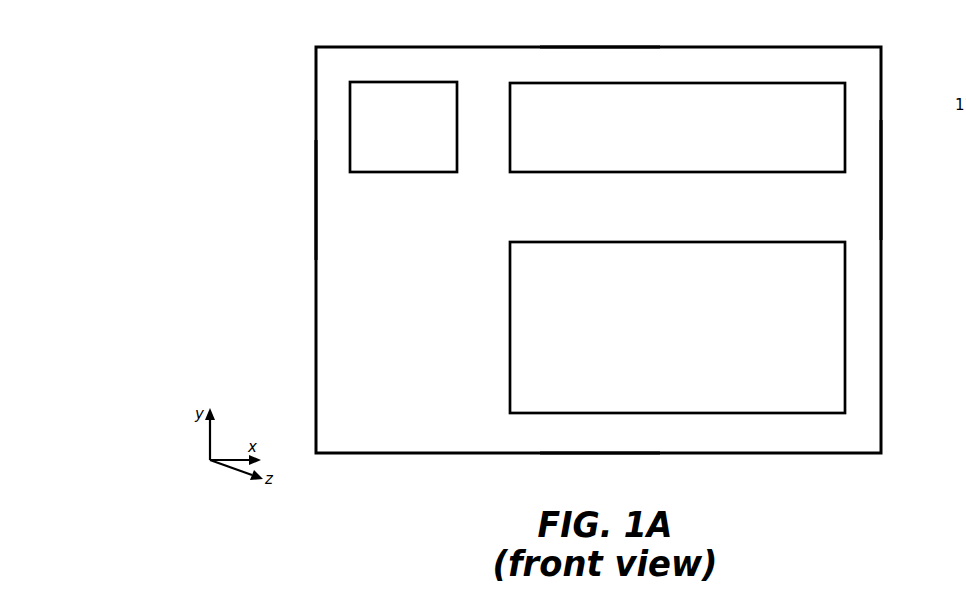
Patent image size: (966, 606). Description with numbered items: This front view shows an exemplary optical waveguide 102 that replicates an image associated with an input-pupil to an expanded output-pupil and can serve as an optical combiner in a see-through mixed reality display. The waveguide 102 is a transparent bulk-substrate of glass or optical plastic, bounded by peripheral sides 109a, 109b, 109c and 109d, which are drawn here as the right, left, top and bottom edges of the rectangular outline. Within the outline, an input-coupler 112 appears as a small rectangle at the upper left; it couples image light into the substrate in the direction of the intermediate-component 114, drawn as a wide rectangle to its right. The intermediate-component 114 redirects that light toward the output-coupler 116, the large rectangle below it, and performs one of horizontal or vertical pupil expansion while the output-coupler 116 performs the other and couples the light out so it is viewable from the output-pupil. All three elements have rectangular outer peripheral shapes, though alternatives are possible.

The optical waveguide 102 is at (276, 80).
The peripheral side 109a is at (881, 177).
The peripheral side 109b is at (316, 193).
The peripheral side 109c is at (603, 46).
The peripheral side 109d is at (604, 455).
The input-coupler 112 is at (447, 101).
The intermediate-component 114 is at (817, 104).
The output-coupler 116 is at (819, 262).